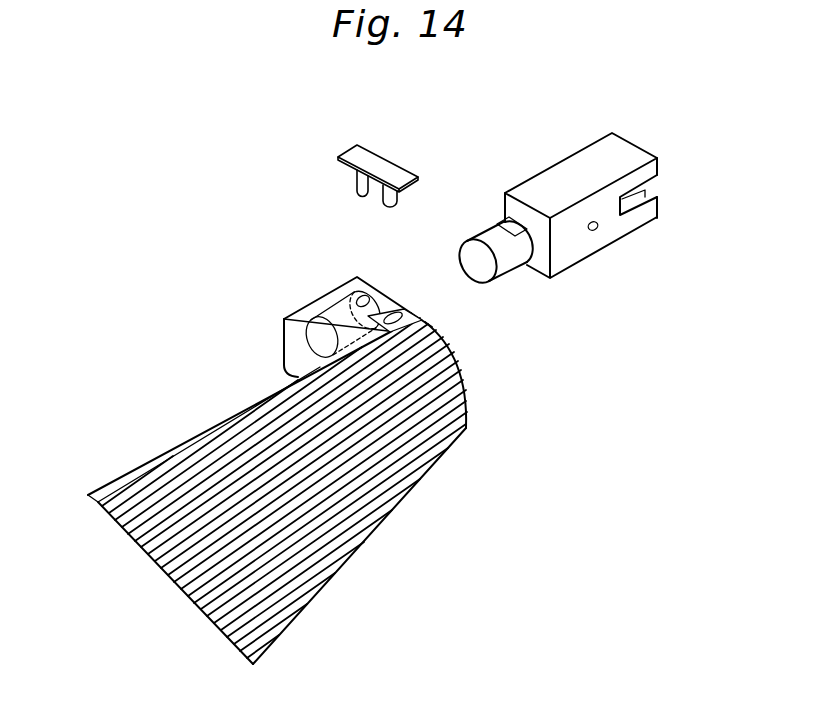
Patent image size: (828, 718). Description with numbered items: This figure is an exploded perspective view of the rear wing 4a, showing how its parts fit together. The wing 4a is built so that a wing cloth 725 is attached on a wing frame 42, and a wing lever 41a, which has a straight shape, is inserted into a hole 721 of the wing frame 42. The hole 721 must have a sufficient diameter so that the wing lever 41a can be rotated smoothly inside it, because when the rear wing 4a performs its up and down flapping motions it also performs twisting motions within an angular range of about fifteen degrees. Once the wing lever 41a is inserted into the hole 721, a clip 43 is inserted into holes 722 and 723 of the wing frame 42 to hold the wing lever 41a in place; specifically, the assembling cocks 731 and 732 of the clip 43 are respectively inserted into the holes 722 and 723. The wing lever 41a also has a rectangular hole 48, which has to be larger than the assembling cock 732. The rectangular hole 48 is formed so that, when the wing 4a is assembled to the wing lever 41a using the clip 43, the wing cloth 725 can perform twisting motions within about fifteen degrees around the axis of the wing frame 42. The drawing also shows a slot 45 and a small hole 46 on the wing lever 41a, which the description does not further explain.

The rear wing 4a is at (302, 443).
The wing frame 42 is at (237, 410).
The clip 43 is at (371, 141).
The assembling cock 731 is at (398, 198).
The assembling cock 732 is at (356, 178).
The wing lever 41a is at (582, 211).
The slot 45 is at (640, 198).
The hole 46 is at (596, 231).
The rectangular hole 48 is at (515, 238).
The hole 721 is at (387, 292).
The hole 722 is at (348, 297).
The hole 723 is at (422, 318).
The wing cloth 725 is at (388, 520).